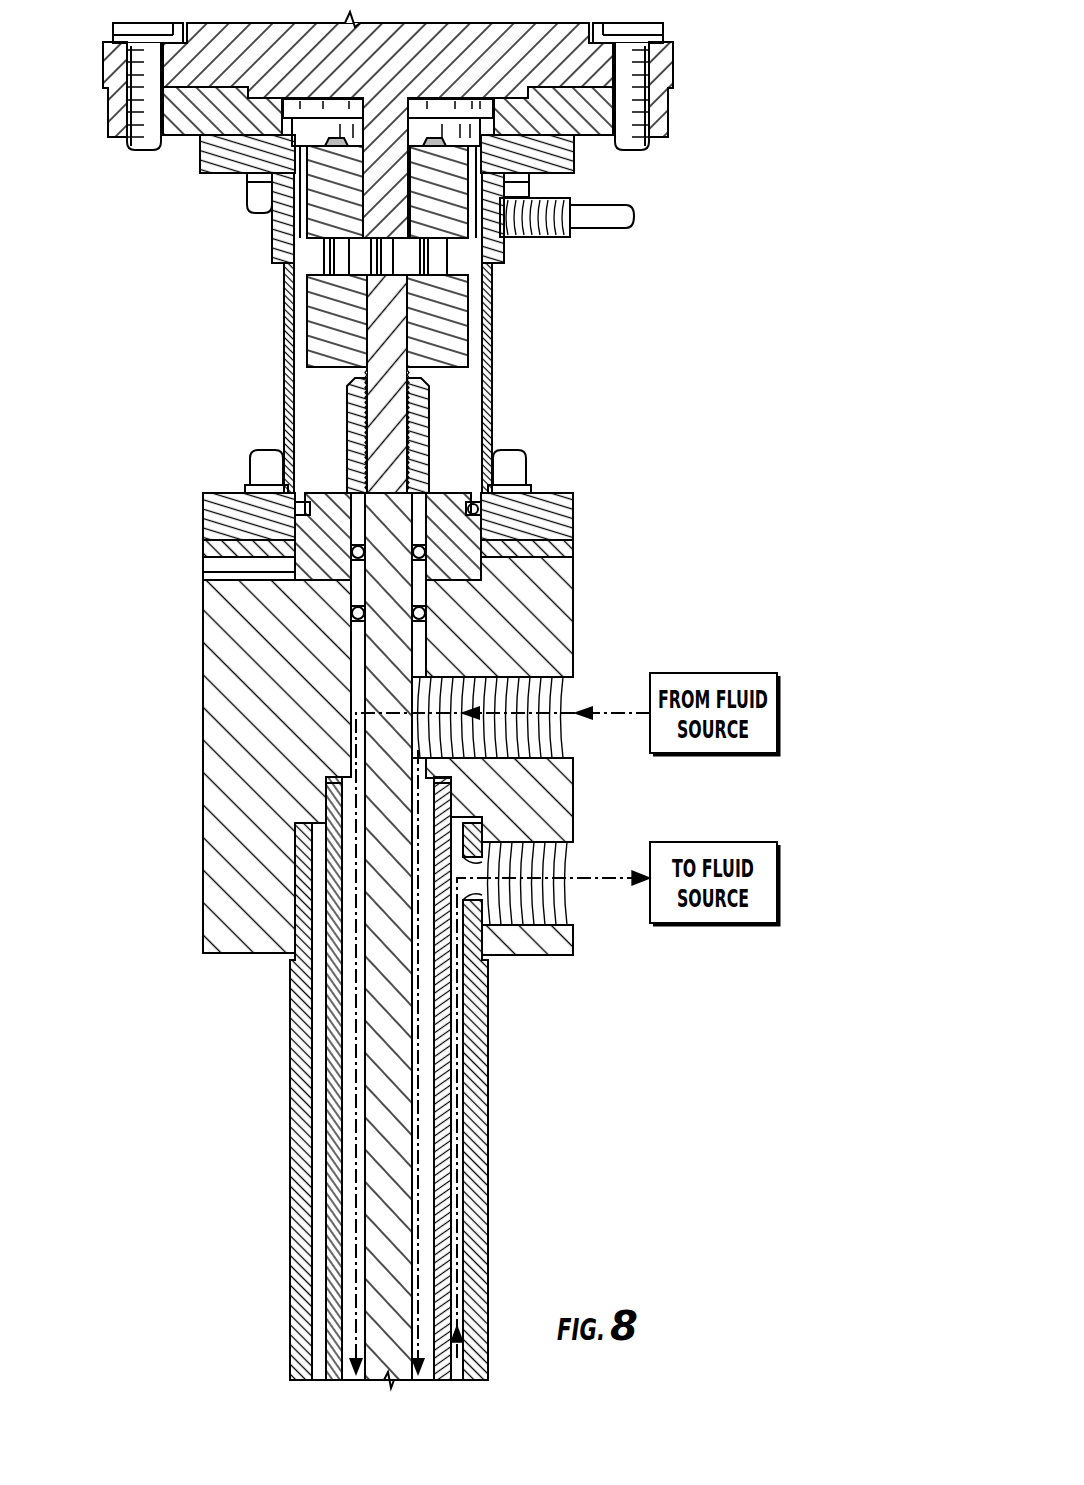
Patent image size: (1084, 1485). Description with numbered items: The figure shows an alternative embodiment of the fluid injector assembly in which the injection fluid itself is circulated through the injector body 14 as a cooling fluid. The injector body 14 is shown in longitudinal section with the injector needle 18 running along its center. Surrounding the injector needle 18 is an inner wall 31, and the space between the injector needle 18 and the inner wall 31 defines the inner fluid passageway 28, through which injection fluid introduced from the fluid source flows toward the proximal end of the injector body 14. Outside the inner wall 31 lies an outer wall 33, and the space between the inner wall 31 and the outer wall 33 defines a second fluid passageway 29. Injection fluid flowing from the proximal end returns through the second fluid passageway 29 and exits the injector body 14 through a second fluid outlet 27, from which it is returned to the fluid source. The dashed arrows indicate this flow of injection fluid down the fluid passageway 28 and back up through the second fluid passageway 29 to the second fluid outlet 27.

The injector body 14 is at (485, 1153).
The injector needle 18 is at (380, 1108).
The second fluid outlet 27 is at (568, 908).
The fluid passageway 28 is at (427, 1093).
The second fluid passageway 29 is at (458, 1249).
The inner wall 31 is at (333, 1183).
The outer wall 33 is at (302, 1282).